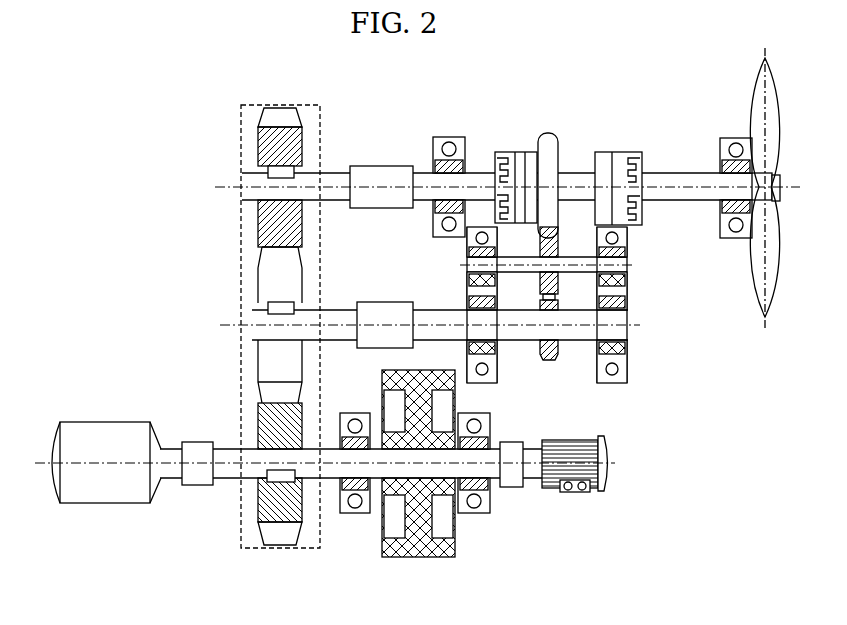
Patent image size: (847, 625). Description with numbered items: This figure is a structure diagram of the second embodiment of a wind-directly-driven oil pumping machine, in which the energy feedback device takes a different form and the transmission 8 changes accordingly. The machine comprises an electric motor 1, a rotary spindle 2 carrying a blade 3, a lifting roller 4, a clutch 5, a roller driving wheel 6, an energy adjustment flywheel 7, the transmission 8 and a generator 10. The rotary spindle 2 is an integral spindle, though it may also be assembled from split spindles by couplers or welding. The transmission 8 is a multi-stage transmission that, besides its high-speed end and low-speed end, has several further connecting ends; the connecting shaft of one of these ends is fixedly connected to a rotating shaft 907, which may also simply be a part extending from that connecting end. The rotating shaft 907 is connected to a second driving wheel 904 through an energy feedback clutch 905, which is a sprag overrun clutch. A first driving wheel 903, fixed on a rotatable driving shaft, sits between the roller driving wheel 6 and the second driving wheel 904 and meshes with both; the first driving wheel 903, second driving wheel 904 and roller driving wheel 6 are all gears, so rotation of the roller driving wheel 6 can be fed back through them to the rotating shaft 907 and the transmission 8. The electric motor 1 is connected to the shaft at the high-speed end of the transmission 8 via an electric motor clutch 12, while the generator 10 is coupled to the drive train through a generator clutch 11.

The electric motor 1 is at (565, 490).
The rotary spindle 2 is at (783, 187).
The blade 3 is at (775, 103).
The lifting roller 4 is at (584, 170).
The clutch 5 is at (494, 158).
The roller driving wheel 6 is at (547, 135).
The energy adjustment flywheel 7 is at (423, 548).
The transmission 8 is at (252, 250).
The generator 10 is at (77, 420).
The generator clutch 11 is at (192, 473).
The electric motor clutch 12 is at (512, 473).
The first driving wheel 903 is at (548, 245).
The second driving wheel 904 is at (548, 360).
The energy feedback clutch 905 is at (555, 306).
The rotating shaft 907 is at (575, 330).